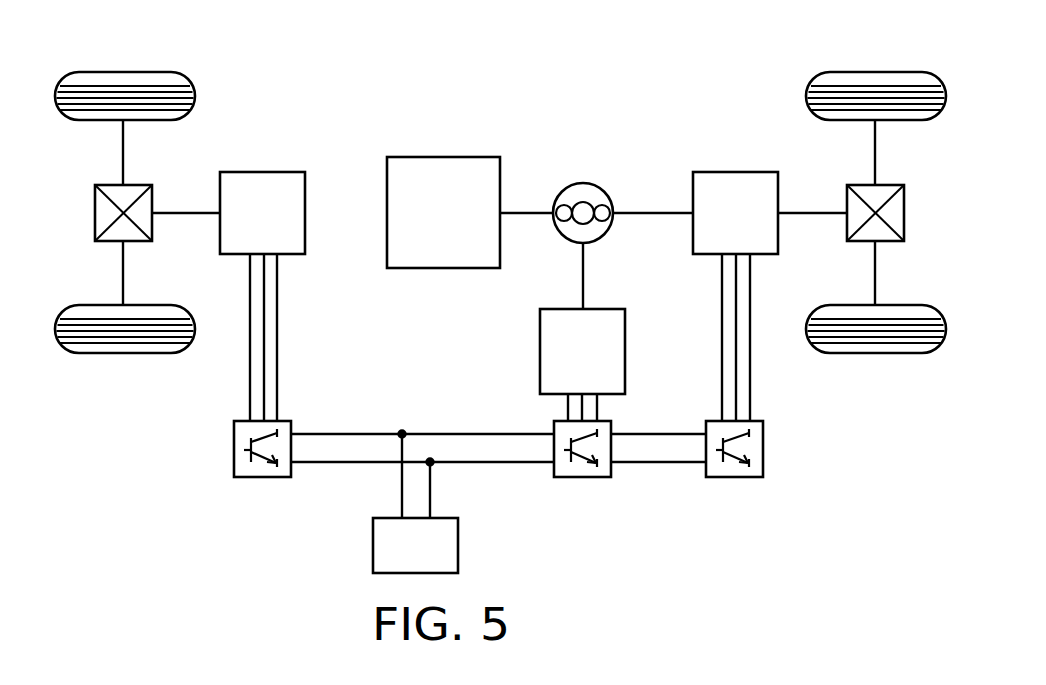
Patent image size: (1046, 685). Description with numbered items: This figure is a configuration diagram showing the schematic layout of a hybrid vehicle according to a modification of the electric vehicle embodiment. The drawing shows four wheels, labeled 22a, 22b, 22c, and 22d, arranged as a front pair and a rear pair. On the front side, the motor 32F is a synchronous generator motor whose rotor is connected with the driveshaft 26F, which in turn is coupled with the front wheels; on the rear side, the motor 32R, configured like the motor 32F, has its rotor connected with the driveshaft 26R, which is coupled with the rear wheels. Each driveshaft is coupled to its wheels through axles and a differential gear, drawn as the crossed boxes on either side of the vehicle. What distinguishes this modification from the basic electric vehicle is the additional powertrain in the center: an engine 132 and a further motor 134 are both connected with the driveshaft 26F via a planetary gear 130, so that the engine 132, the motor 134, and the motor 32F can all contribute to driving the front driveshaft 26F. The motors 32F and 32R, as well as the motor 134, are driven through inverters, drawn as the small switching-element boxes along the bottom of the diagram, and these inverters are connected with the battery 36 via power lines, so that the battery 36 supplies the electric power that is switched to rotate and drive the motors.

The front right wheel 22a is at (875, 71).
The rear right wheel 22b is at (873, 354).
The front left wheel 22c is at (123, 71).
The rear left wheel 22d is at (125, 354).
The driveshaft 26R is at (180, 211).
The driveshaft 26F is at (805, 211).
The motor 32R is at (262, 171).
The motor 32F is at (735, 171).
The planetary gear 130 is at (583, 183).
The engine 132 is at (443, 155).
The motor 134 is at (612, 308).
The battery 36 is at (458, 545).